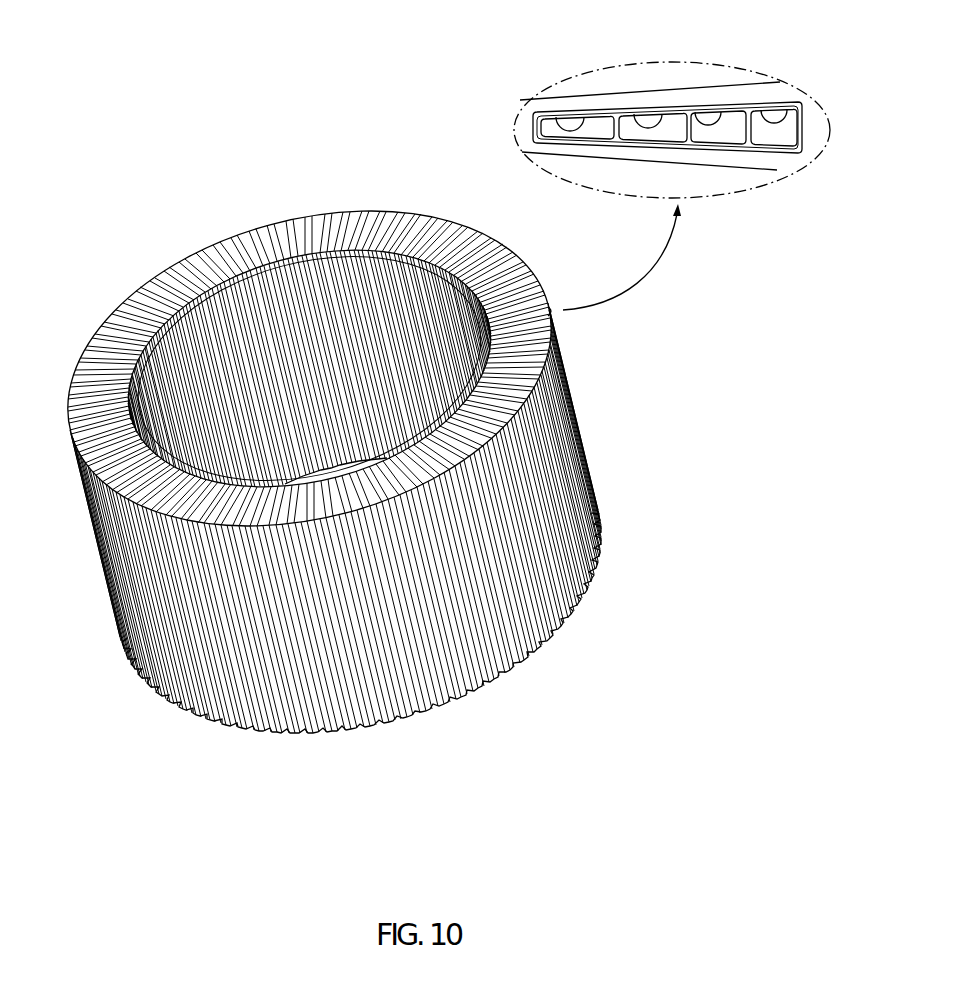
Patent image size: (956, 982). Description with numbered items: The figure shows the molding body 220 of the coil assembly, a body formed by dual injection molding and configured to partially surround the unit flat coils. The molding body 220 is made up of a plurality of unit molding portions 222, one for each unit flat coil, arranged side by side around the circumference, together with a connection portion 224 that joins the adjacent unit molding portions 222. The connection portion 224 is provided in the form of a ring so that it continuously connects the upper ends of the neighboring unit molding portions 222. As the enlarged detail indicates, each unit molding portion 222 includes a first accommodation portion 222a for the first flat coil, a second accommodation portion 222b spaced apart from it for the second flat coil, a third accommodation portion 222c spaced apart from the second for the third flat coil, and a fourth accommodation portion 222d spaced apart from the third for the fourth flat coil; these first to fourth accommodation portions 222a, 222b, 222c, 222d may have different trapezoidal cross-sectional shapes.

The molding body 220 is at (118, 173).
The unit molding portion 222 is at (430, 716).
The first accommodation portion 222a is at (785, 108).
The second accommodation portion 222b is at (699, 110).
The third accommodation portion 222c is at (662, 115).
The fourth accommodation portion 222d is at (587, 115).
The connection portion 224 is at (416, 470).